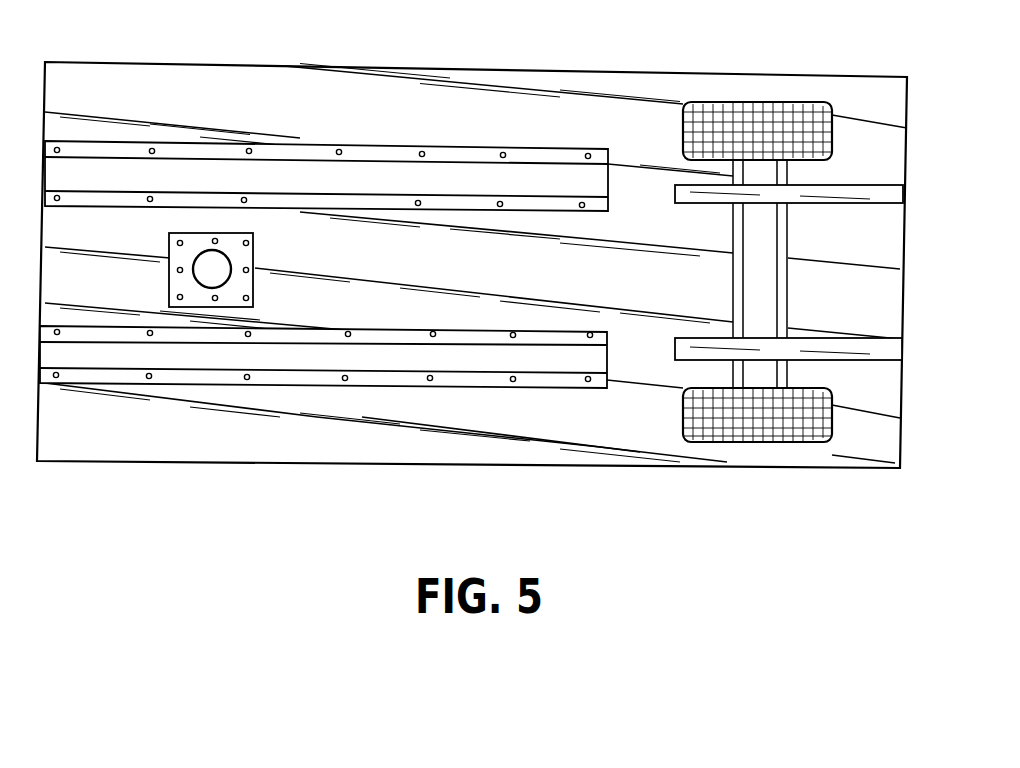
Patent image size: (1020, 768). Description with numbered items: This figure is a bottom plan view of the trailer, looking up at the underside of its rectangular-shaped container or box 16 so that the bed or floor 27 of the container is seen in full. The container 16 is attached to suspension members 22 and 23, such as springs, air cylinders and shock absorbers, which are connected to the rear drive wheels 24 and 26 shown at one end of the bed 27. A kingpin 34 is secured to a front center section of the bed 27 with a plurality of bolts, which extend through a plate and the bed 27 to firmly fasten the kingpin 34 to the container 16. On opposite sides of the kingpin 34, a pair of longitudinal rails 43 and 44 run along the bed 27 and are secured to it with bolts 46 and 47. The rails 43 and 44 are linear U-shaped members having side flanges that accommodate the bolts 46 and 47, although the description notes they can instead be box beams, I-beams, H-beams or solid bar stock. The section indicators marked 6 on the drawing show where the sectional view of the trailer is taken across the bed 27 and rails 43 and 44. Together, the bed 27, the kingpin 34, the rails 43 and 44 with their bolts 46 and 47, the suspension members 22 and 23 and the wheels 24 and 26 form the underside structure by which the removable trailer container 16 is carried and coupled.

The section line 6- 6 is at (218, 8).
The container or box 16 is at (733, 75).
The suspension member 22 is at (822, 197).
The suspension member 23 is at (828, 352).
The rear drive wheel 24 is at (802, 118).
The rear drive wheel 26 is at (748, 423).
The bed 27 is at (475, 283).
The kingpin 34 is at (220, 273).
The longitudinal rail 43 is at (457, 173).
The longitudinal rail 44 is at (460, 358).
The bolts 46 is at (249, 381).
The bolts 47 is at (251, 149).